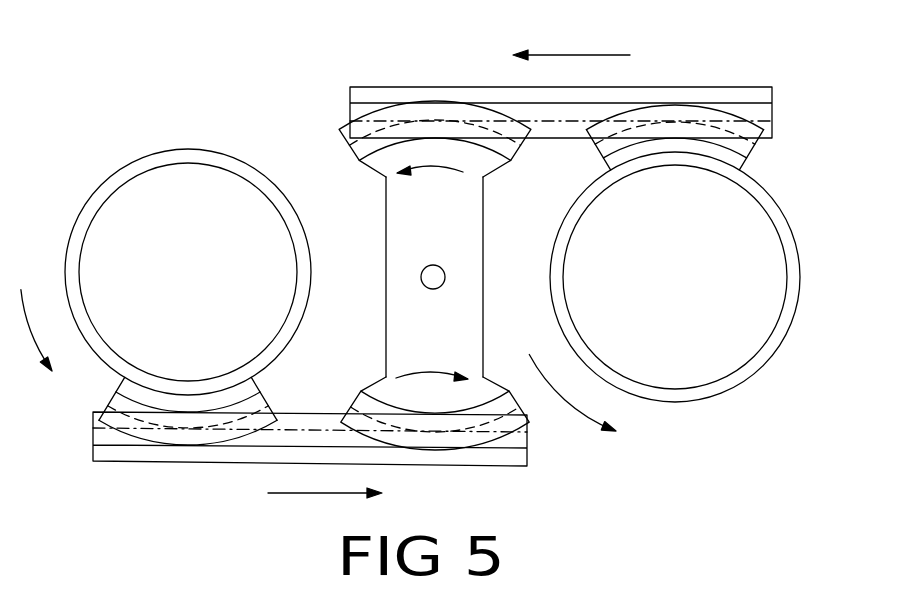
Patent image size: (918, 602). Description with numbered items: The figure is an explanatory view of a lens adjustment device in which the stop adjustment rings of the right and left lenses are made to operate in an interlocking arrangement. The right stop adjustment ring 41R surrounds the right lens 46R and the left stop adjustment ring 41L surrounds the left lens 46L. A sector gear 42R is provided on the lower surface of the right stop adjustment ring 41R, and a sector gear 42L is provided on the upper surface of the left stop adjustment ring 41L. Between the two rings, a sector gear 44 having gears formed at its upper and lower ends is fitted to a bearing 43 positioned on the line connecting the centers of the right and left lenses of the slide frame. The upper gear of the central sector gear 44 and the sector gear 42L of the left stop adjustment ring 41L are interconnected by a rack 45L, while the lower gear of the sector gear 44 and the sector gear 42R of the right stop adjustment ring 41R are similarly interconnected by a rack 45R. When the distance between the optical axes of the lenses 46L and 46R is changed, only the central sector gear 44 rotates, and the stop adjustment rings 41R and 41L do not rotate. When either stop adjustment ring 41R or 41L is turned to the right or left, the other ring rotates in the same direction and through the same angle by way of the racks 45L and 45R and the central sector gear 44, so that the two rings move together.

The right stop adjustment ring 41R is at (73, 220).
The right lens 46R is at (152, 197).
The sector gear 42R is at (100, 405).
The rack 45R is at (192, 462).
The sector gear 44 is at (397, 212).
The bearing 43 is at (446, 273).
The rack 45L is at (738, 87).
The sector gear 42L is at (758, 153).
The left stop adjustment ring 41L is at (782, 345).
The left lens 46L is at (710, 363).